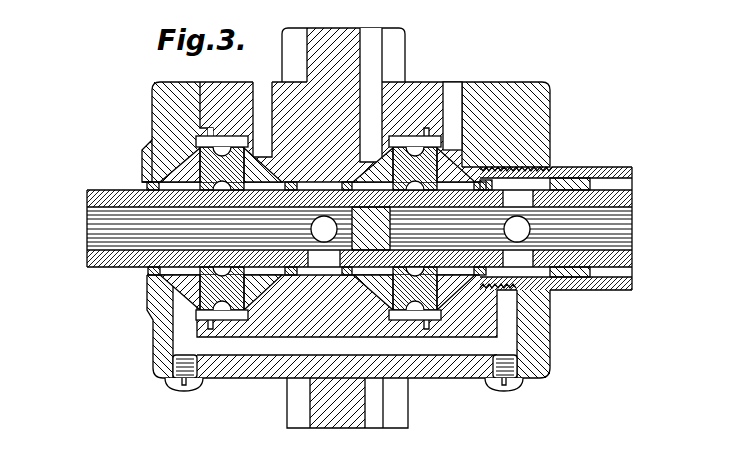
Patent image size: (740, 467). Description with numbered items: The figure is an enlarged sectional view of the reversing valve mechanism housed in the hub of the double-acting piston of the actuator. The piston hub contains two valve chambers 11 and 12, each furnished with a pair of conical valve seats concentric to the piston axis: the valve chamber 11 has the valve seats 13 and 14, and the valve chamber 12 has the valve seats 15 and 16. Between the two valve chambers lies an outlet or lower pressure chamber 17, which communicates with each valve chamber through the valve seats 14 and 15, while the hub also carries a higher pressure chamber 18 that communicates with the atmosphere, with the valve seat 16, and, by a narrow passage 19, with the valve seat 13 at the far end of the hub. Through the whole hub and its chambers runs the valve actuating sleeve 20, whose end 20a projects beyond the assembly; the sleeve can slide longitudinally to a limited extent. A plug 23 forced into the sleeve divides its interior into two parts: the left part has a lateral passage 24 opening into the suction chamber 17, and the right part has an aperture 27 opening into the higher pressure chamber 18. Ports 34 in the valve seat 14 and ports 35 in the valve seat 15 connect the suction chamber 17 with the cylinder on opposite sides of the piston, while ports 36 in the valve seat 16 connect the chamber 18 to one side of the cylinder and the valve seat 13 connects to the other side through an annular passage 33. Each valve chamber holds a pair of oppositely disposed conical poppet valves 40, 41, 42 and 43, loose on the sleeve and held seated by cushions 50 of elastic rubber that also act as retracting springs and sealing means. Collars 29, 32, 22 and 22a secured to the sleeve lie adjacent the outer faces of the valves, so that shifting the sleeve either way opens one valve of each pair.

The valve chamber 11 is at (221, 145).
The valve chamber 12 is at (413, 146).
The valve seat 13 is at (168, 280).
The valve seat 14 is at (250, 340).
The valve seat 15 is at (387, 300).
The valve seat 16 is at (468, 300).
The outlet chamber 17 is at (300, 300).
The higher pressure chamber 18 is at (548, 305).
The narrow passage 19 is at (220, 352).
The valve sleeve 20 is at (632, 243).
The shaft end 20a is at (87, 233).
The collar 22 is at (359, 194).
The collar 22a is at (320, 285).
The plug 23 is at (390, 231).
The lateral passage 24 is at (311, 226).
The aperture 27 is at (531, 229).
The collar 29 is at (147, 183).
The collar 32 is at (482, 181).
The annular passage 33 is at (150, 275).
The ports 34 is at (260, 93).
The ports 35 is at (376, 92).
The ports 36 is at (455, 96).
The poppet valve 40 is at (148, 144).
The poppet valve 41 is at (283, 300).
The poppet valve 42 is at (383, 343).
The poppet valve 43 is at (482, 165).
The cushions 50 is at (462, 148).